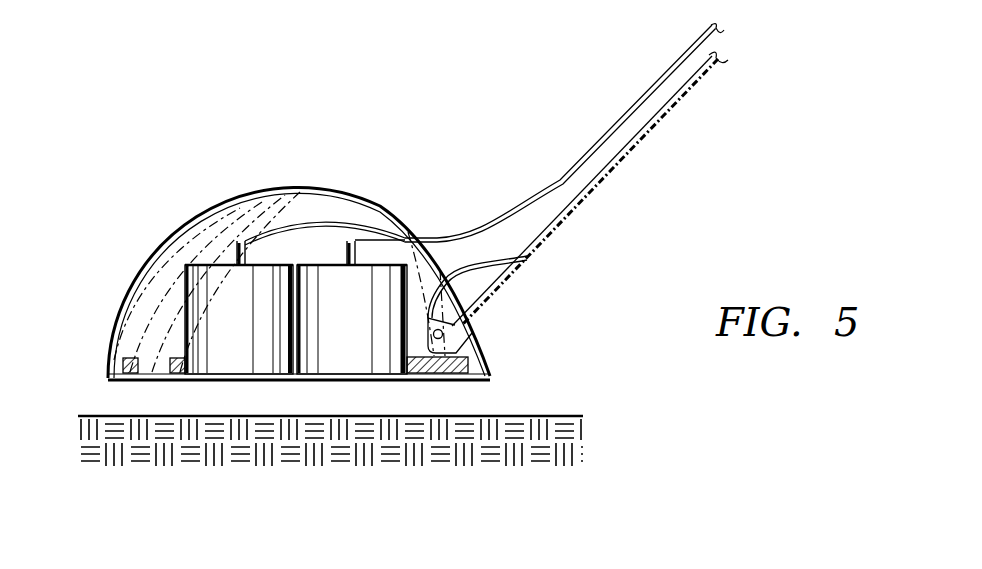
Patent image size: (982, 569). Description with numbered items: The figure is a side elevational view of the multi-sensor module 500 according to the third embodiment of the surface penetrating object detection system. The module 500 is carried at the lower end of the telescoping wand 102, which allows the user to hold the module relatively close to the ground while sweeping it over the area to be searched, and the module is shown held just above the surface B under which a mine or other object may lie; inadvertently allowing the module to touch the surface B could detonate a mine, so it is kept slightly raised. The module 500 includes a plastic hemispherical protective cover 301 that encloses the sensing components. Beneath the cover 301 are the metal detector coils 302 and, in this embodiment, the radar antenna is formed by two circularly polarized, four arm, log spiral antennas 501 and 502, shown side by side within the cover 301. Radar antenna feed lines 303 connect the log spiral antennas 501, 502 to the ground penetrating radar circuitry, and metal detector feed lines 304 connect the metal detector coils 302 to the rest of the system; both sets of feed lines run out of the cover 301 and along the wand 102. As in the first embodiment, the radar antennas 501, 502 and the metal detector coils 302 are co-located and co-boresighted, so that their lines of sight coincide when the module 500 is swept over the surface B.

The multi-sensor module 500 is at (236, 130).
The plastic hemispherical protective cover 301 is at (177, 231).
The metal detector coils 302 is at (169, 365).
The radar antenna feed lines 303 is at (497, 213).
The metal detector feed lines 304 is at (530, 252).
The telescoping wand 102 is at (630, 152).
The four arm log spiral antenna 501 is at (258, 324).
The four arm log spiral antenna 502 is at (372, 324).
The surface B is at (555, 416).